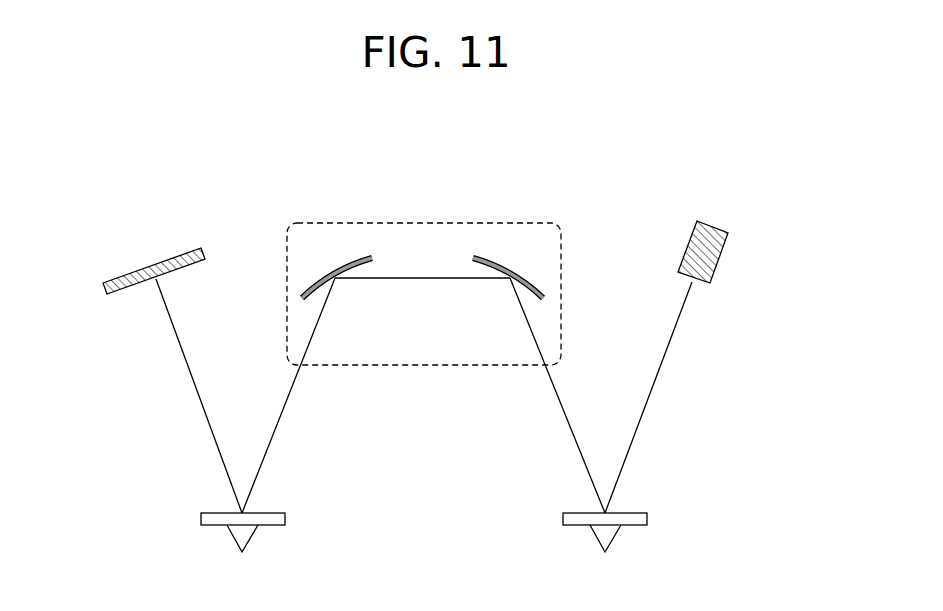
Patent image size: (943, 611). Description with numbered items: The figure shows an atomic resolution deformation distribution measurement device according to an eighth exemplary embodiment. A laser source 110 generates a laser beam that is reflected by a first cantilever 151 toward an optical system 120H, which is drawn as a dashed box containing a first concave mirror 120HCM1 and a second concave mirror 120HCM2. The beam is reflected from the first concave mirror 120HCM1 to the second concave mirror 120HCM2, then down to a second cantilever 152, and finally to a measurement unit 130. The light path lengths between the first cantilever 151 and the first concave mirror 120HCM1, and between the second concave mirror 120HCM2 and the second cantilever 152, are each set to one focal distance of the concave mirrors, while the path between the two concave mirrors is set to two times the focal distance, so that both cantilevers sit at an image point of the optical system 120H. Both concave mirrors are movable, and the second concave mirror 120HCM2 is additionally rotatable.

The laser source 110 is at (712, 222).
The optical system 120H is at (452, 223).
The first concave mirror 120HCM1 is at (510, 273).
The second concave mirror 120HCM2 is at (340, 270).
The measurement unit 130 is at (157, 278).
The first cantilever 151 is at (608, 532).
The second cantilever 152 is at (240, 533).